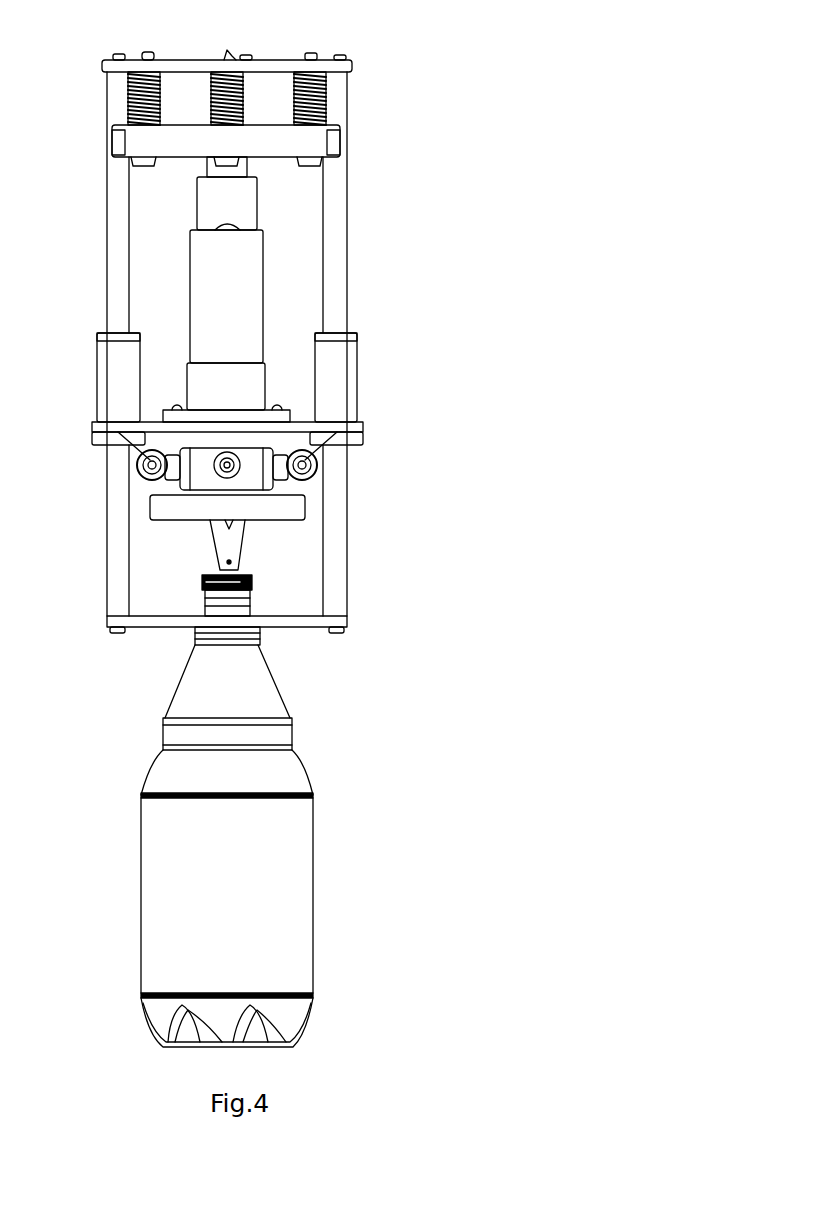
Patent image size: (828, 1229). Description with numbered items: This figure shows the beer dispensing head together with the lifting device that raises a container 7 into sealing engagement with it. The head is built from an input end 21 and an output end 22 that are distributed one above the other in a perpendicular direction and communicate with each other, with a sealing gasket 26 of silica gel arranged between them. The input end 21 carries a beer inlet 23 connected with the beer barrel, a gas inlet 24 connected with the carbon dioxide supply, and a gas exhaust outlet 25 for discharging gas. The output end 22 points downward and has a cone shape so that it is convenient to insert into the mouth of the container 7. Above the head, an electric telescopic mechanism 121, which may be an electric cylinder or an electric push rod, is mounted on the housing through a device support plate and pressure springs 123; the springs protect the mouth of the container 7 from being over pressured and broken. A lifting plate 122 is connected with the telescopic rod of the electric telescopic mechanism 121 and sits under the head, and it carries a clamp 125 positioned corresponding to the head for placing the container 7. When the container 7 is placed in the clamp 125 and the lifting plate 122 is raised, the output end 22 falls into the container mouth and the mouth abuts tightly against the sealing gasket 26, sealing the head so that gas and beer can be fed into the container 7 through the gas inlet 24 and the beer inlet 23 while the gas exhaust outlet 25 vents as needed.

The pressure spring 123 is at (237, 115).
The electric telescopic mechanism 121 is at (253, 262).
The input end 21 is at (275, 485).
The beer inlet 23 is at (232, 458).
The gas inlet 24 is at (138, 458).
The gas exhaust outlet 25 is at (300, 462).
The sealing gasket 26 is at (152, 503).
The output end 22 is at (222, 530).
The lifting plate 122 is at (177, 627).
The clamp 125 is at (253, 617).
The container 7 is at (265, 775).